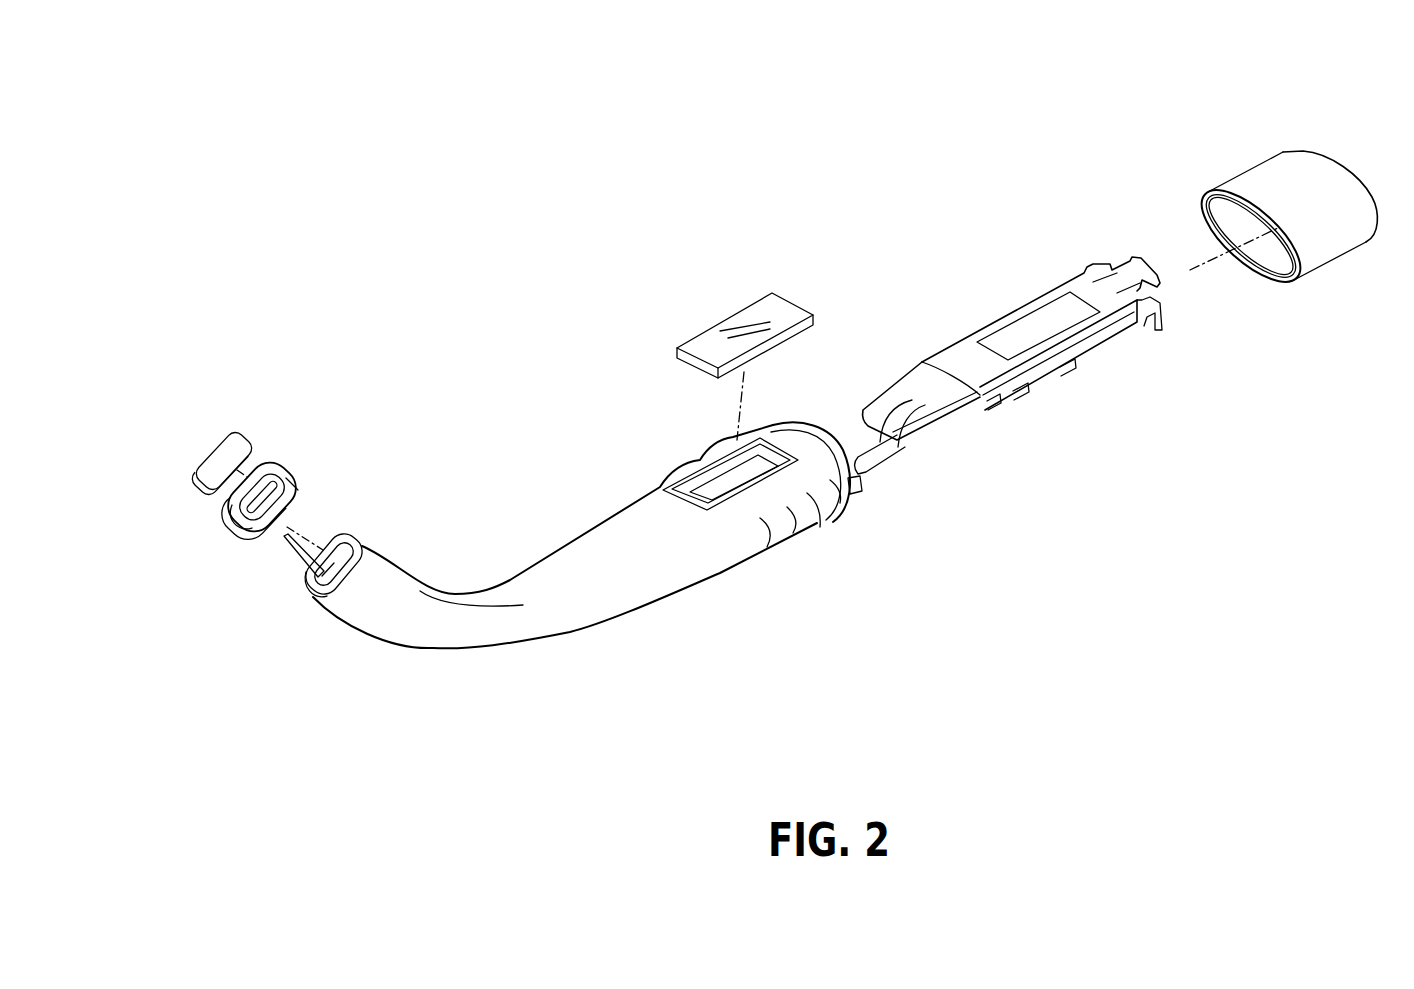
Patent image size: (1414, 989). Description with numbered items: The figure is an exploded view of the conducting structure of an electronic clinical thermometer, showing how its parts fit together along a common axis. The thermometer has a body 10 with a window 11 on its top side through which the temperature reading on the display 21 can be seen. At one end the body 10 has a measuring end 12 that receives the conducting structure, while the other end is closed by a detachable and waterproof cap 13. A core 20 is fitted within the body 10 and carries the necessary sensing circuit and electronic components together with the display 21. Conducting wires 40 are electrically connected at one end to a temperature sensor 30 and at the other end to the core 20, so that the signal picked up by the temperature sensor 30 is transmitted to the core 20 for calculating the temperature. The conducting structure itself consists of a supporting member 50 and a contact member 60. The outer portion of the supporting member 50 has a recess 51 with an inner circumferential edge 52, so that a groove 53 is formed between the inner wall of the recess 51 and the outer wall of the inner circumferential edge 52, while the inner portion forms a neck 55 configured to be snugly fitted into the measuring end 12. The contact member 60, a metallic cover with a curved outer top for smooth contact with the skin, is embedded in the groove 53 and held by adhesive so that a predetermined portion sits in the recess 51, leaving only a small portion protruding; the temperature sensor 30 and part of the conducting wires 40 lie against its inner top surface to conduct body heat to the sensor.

The body 10 is at (576, 556).
The window 11 is at (757, 313).
The measuring end 12 is at (390, 620).
The cap 13 is at (1318, 192).
The core 20 is at (1093, 337).
The display 21 is at (1027, 327).
The temperature sensor 30 is at (285, 543).
The conducting wires 40 is at (300, 563).
The supporting member 50 is at (291, 487).
The recess 51 is at (260, 463).
The inner circumferential edge 52 is at (240, 527).
The groove 53 is at (236, 500).
The neck 55 is at (290, 488).
The contact member 60 is at (218, 447).